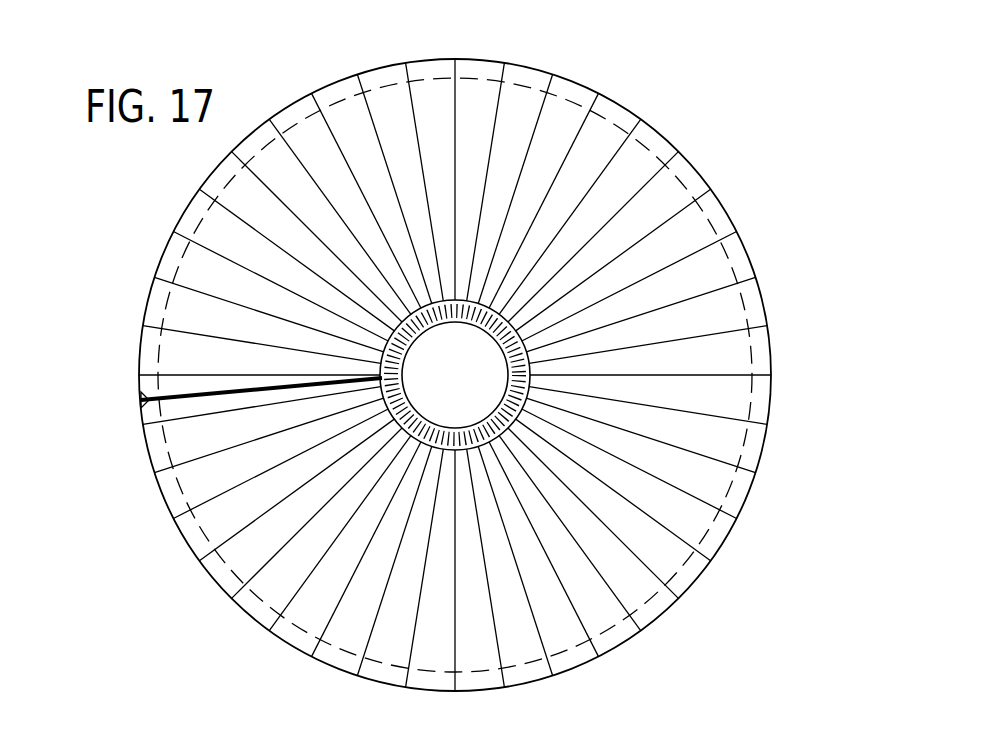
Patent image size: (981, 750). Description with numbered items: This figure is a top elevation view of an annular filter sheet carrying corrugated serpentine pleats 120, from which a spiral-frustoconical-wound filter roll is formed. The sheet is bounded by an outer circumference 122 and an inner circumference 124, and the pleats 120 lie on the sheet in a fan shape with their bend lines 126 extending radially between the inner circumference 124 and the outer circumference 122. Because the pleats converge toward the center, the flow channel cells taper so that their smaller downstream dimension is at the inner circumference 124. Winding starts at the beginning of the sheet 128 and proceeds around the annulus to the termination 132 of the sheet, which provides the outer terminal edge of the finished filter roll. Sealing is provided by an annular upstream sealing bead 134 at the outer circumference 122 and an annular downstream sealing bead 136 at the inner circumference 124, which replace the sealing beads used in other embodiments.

The corrugated serpentine pleats 120 is at (607, 137).
The outer circumference 122 is at (700, 173).
The inner circumference 124 is at (485, 330).
The bend lines 126 is at (708, 290).
The beginning of the sheet 128 is at (142, 412).
The termination of the sheet 132 is at (143, 400).
The annular upstream sealing bead 134 is at (338, 655).
The annular downstream sealing bead 136 is at (452, 428).